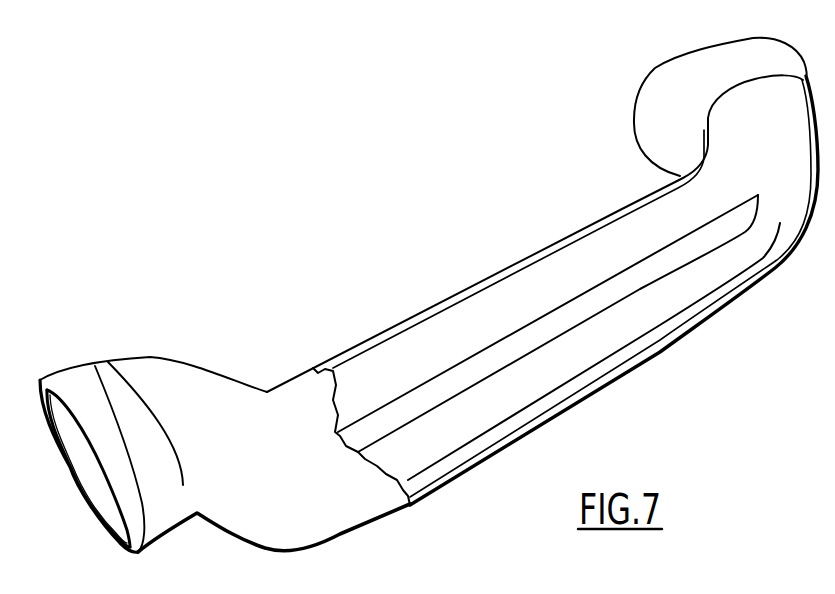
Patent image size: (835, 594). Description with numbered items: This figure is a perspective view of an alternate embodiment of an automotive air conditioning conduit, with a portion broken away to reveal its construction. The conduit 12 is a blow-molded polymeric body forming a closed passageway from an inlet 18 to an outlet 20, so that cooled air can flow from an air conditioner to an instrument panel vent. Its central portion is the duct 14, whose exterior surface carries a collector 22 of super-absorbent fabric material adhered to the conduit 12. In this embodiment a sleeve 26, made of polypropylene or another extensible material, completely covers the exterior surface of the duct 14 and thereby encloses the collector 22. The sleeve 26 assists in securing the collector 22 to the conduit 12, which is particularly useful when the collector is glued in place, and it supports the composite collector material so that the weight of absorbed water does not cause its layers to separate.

The conduit 12 is at (90, 362).
The duct 14 is at (380, 332).
The inlet 18 is at (692, 58).
The outlet 20 is at (40, 380).
The collector 22 is at (208, 375).
The sleeve 26 is at (488, 312).